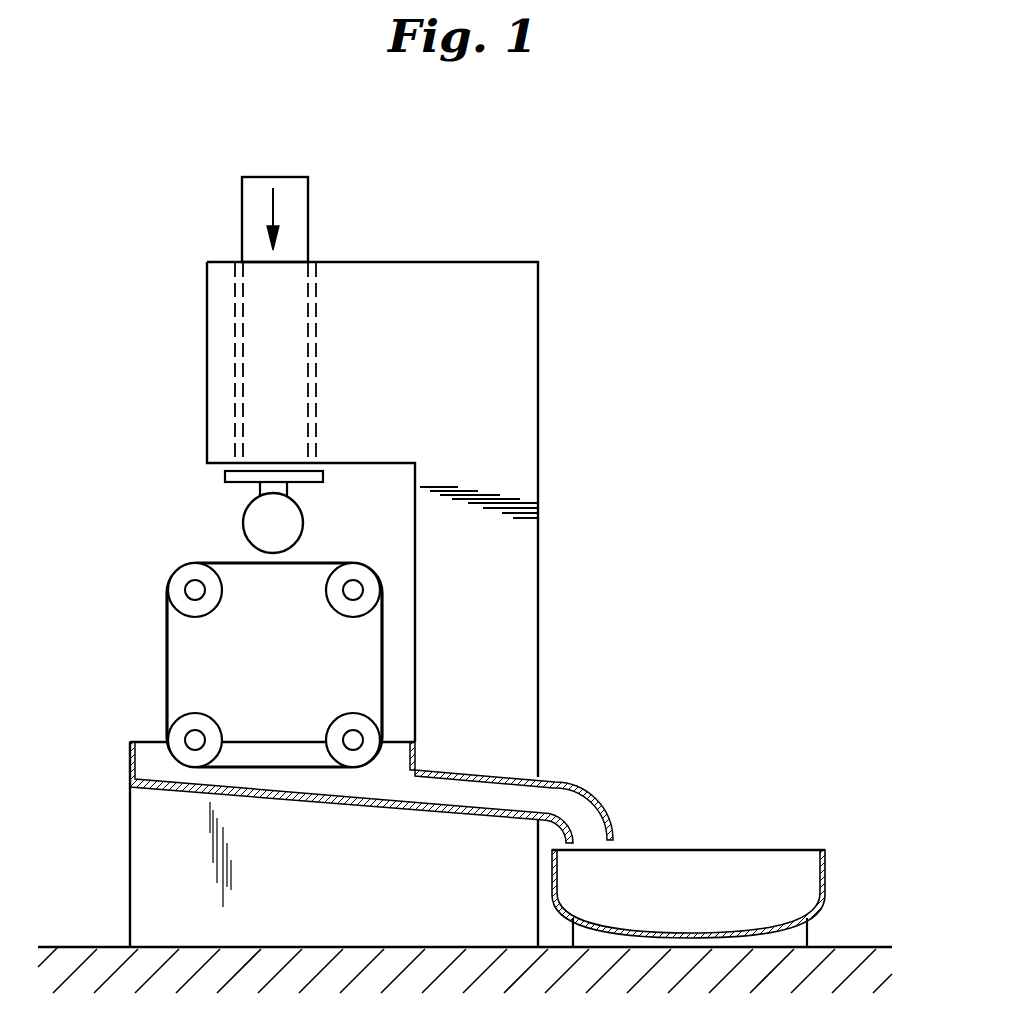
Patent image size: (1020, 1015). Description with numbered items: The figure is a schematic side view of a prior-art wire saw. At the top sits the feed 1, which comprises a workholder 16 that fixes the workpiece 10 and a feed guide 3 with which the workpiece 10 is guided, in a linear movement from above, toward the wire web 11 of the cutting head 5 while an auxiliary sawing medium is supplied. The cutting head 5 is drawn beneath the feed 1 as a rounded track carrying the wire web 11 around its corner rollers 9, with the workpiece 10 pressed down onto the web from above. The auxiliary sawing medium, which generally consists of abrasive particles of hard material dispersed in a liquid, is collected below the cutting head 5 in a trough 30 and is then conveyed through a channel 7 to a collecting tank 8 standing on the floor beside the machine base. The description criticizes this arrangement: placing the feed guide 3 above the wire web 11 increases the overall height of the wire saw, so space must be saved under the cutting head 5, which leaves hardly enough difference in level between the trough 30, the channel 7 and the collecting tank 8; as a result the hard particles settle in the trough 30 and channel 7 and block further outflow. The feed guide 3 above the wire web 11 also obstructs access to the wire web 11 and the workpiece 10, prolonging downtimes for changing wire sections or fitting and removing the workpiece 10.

The feed 1 is at (293, 218).
The feed guide 3 is at (236, 345).
The workholder 16 is at (266, 489).
The workpiece 10 is at (290, 527).
The wire web 11 is at (222, 561).
The rollers 9 is at (178, 597).
The cutting head 5 is at (162, 638).
The trough 30 is at (173, 776).
The channel 7 is at (577, 815).
The collecting tank 8 is at (687, 877).